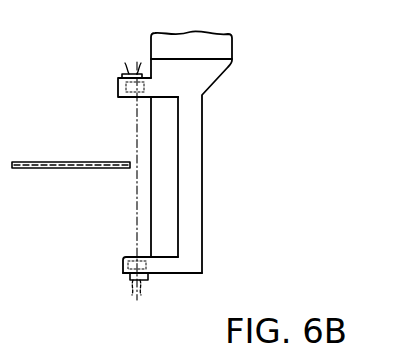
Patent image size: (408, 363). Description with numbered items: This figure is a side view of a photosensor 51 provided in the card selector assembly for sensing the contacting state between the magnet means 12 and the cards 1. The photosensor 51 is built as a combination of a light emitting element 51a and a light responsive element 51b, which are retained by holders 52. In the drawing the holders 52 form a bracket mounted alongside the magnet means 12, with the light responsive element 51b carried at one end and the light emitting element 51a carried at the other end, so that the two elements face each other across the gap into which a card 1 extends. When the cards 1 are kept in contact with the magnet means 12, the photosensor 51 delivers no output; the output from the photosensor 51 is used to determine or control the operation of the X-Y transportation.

The card 1 is at (50, 168).
The magnet means 12 is at (190, 133).
The photosensor 51 is at (108, 181).
The light emitting element 51a is at (130, 272).
The light responsive element 51b is at (134, 67).
The holder 52 is at (178, 276).